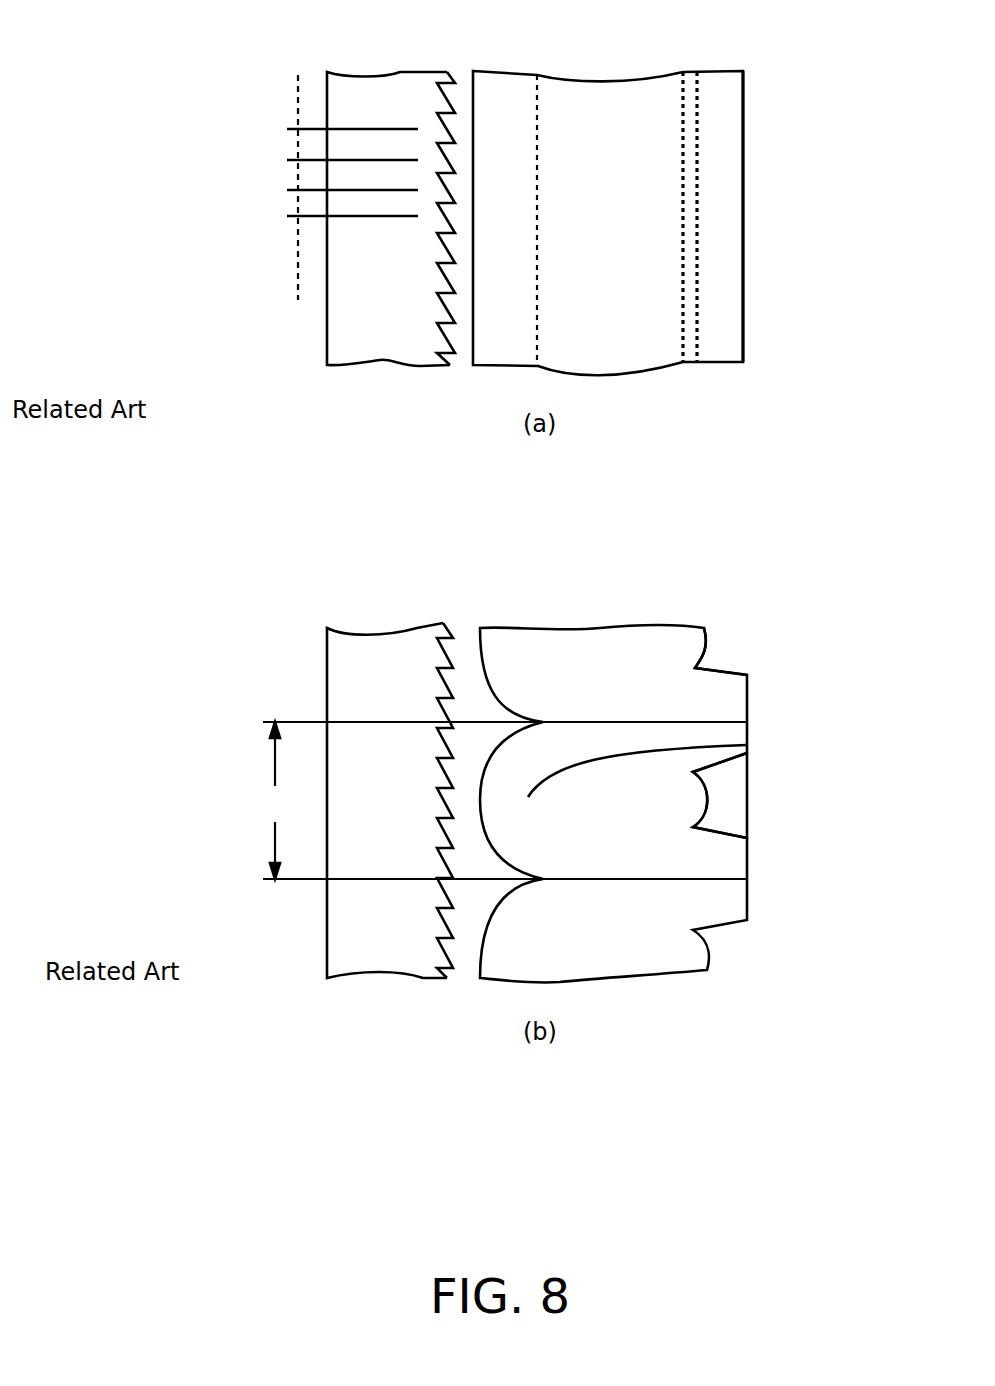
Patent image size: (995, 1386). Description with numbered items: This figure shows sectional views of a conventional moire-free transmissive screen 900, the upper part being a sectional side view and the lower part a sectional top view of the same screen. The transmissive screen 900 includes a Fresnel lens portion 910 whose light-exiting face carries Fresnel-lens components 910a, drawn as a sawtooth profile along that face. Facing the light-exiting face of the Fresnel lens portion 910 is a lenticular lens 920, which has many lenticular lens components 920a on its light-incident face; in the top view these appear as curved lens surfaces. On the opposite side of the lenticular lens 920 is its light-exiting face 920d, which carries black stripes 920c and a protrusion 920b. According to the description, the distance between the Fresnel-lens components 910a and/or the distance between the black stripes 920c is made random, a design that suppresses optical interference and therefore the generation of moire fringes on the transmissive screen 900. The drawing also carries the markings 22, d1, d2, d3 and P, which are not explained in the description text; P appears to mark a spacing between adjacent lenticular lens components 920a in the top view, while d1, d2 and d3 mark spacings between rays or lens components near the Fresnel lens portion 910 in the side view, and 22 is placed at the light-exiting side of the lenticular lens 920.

The transmissive screen 900 is at (399, 522).
The Fresnel lens portion 910 is at (368, 72).
The Fresnel-lens components 910a is at (452, 100).
The lenticular lens 920 is at (612, 82).
The lenticular lens components 920a is at (503, 70).
The protrusion 920b is at (722, 672).
The black stripes 920c is at (743, 135).
The light-exiting face 920d is at (687, 72).
The screen 22 is at (743, 278).
The light ray distance d1 is at (297, 208).
The light ray distance d2 is at (297, 180).
The light ray distance d3 is at (297, 147).
The lens pitch P is at (505, 800).